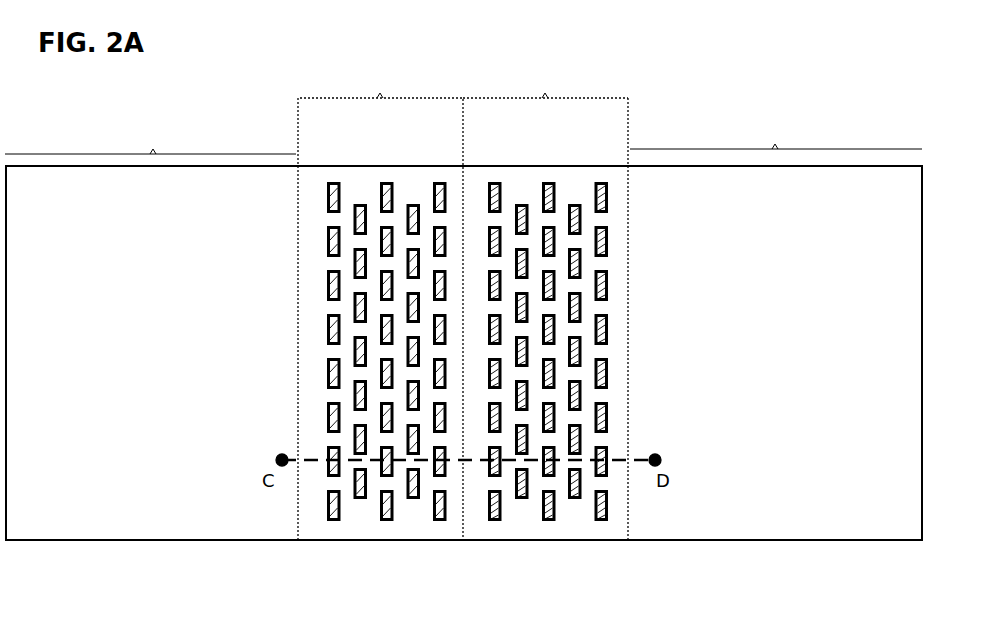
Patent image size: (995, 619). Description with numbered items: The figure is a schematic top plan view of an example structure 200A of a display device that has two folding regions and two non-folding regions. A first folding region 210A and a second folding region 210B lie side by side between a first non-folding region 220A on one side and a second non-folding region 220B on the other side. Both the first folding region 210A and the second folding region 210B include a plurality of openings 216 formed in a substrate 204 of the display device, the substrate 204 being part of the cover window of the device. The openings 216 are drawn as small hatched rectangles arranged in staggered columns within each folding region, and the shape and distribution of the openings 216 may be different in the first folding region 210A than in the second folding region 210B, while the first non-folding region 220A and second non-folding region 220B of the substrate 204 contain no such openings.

The structure of a display device 200A is at (832, 82).
The substrate 204 is at (132, 515).
The first folding region 210A is at (380, 300).
The second folding region 210B is at (545, 300).
The openings 216 is at (608, 508).
The first non-folding region 220A is at (150, 135).
The second non-folding region 220B is at (776, 131).